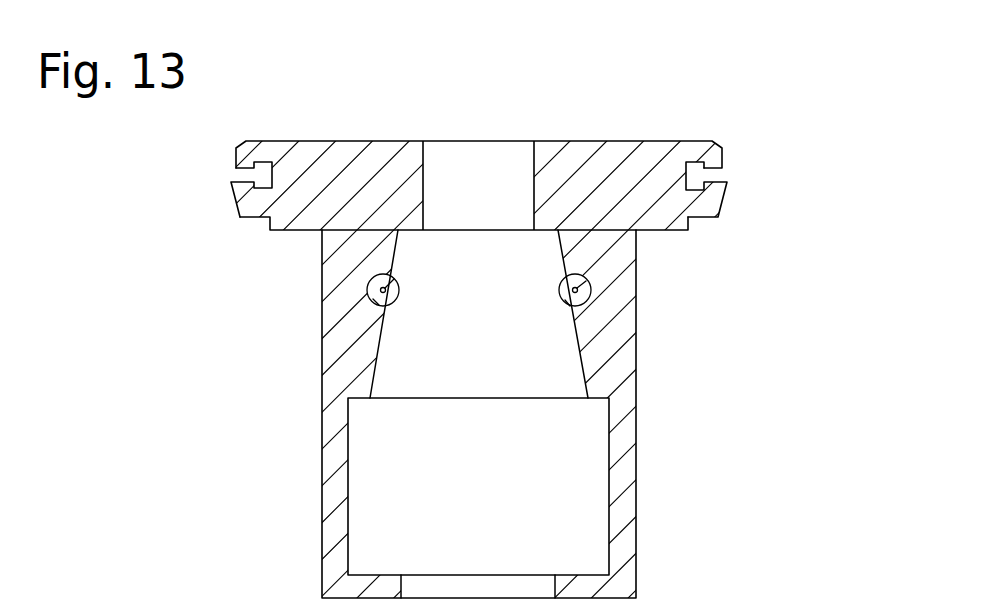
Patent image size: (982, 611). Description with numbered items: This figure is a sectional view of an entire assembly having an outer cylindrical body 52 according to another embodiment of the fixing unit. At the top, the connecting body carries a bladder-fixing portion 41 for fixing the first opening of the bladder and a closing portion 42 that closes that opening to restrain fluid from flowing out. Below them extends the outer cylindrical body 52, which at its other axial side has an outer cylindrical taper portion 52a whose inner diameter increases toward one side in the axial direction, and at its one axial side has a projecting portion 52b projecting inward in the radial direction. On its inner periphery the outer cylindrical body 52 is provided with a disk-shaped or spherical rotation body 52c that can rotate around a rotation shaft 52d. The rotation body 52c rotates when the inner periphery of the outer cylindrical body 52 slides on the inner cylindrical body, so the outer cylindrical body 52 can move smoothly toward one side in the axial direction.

The bladder-fixing portion 41 is at (233, 201).
The closing portion 42 is at (370, 140).
The outer cylindrical body 52 is at (651, 352).
The outer cylindrical taper portion 52a is at (582, 358).
The projecting portion 52b is at (375, 575).
The rotation body 52c is at (555, 308).
The rotation shaft 52d is at (395, 279).